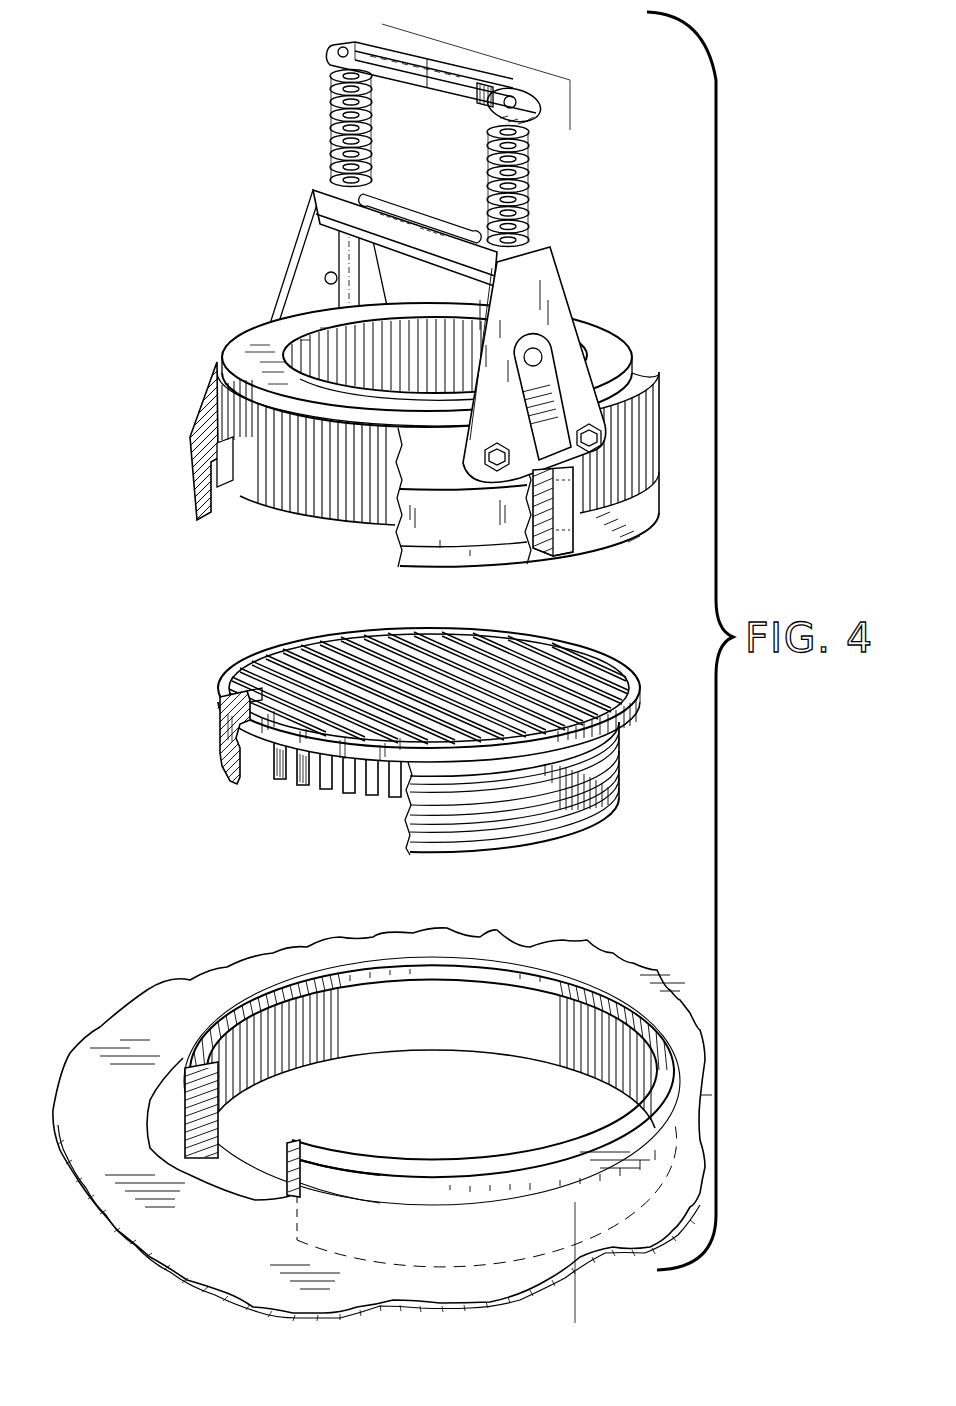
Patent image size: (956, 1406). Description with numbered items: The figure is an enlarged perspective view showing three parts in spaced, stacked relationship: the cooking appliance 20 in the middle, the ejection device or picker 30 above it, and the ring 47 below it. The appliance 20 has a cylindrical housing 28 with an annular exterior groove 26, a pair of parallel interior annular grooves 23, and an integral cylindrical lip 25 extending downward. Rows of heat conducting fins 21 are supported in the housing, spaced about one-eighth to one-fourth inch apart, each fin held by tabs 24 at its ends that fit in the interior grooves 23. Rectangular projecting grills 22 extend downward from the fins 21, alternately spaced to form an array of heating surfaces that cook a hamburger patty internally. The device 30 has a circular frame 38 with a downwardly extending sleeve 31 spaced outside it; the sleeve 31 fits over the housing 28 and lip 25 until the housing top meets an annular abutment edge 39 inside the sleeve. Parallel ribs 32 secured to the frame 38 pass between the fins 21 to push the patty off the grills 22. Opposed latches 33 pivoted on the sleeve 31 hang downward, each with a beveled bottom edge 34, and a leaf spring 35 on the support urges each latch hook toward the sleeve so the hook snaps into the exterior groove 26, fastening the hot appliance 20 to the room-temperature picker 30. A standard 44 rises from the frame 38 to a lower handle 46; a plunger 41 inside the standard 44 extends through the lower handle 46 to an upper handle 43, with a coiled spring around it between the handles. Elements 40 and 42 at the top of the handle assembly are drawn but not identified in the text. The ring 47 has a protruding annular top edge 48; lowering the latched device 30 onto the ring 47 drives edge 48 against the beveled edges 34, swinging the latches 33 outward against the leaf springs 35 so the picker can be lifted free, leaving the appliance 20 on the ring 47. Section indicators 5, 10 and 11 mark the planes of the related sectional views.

The section line 5- 5 is at (185, 735).
The section line 10- 10 is at (440, 6).
The section line 11- 11 is at (160, 446).
The appliance 20 is at (418, 728).
The heat conducting fins 21 is at (383, 655).
The projecting grills 22 is at (311, 783).
The interior annular grooves 23 is at (222, 730).
The tabs 24 is at (229, 681).
The cylindrical lip 25 is at (536, 816).
The annular exterior groove 26 is at (466, 792).
The cylindrical housing 28 is at (626, 690).
The ejection device 30 is at (236, 315).
The sleeve 31 is at (655, 395).
The ribs 32 is at (331, 527).
The latches 33 is at (565, 506).
The beveled bottom edge 34 is at (540, 546).
The leaf spring 35 is at (543, 382).
The circular frame 38 is at (215, 410).
The annular abutment edge 39 is at (226, 486).
The handle bar 40 is at (540, 110).
The plunger 41 is at (333, 118).
The spring rod 42 is at (333, 145).
The upper handle 43 is at (428, 90).
The standard 44 is at (362, 268).
The lower handle 46 is at (415, 225).
The ring 47 is at (203, 1003).
The protruding annular top edge 48 is at (316, 975).